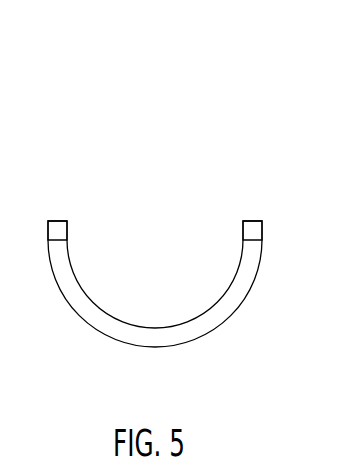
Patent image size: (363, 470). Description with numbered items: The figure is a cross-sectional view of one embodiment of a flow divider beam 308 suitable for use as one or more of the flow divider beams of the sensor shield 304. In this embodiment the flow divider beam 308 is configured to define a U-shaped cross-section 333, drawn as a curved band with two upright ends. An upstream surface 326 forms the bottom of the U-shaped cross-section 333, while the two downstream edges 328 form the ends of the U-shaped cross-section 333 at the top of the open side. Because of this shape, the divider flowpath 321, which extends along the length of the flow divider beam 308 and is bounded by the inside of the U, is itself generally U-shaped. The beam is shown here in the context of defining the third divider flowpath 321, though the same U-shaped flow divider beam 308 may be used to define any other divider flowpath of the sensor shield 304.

The sensor shield 304 is at (50, 130).
The flow divider beam 308 is at (143, 103).
The U-shaped cross-section 333 is at (255, 125).
The downstream edges 328 is at (63, 220).
The third divider flowpath 321 is at (167, 272).
The upstream surface 326 is at (203, 335).